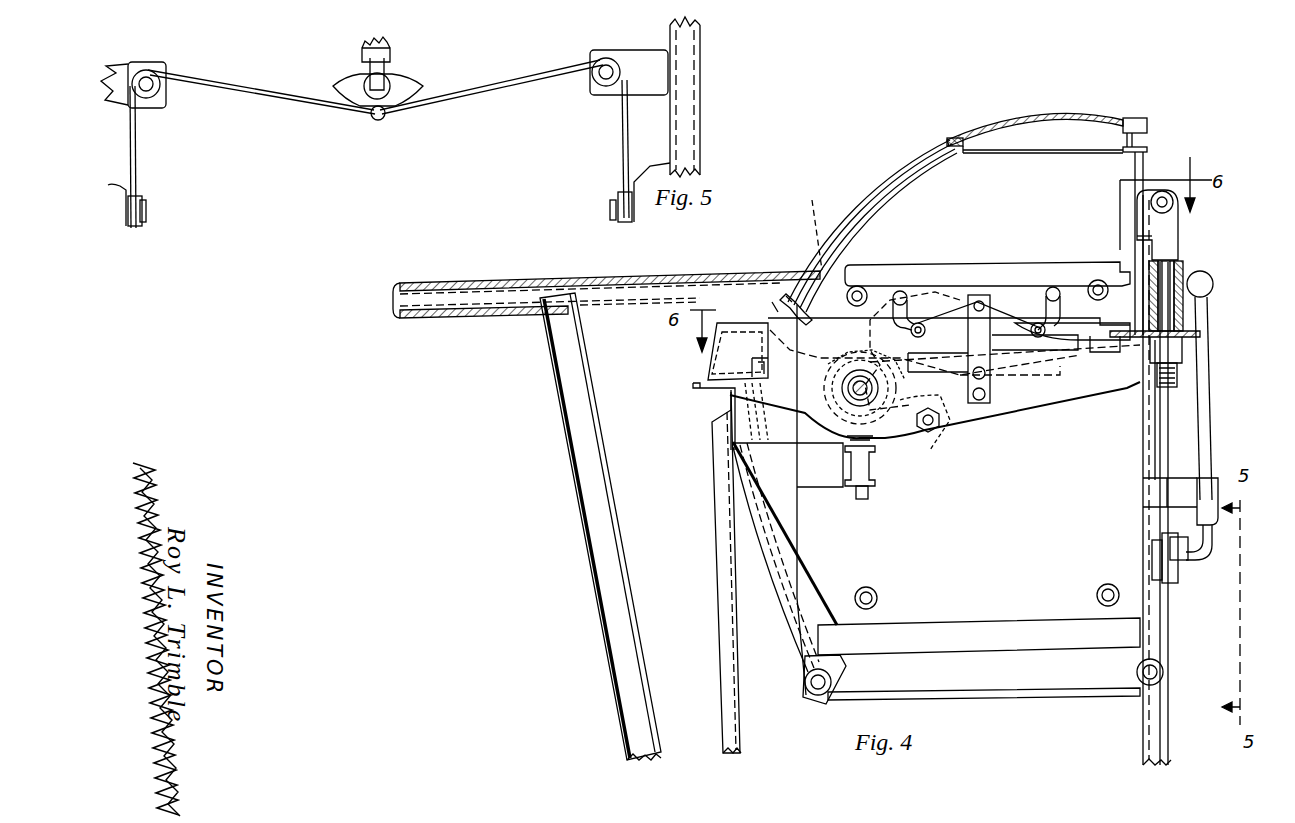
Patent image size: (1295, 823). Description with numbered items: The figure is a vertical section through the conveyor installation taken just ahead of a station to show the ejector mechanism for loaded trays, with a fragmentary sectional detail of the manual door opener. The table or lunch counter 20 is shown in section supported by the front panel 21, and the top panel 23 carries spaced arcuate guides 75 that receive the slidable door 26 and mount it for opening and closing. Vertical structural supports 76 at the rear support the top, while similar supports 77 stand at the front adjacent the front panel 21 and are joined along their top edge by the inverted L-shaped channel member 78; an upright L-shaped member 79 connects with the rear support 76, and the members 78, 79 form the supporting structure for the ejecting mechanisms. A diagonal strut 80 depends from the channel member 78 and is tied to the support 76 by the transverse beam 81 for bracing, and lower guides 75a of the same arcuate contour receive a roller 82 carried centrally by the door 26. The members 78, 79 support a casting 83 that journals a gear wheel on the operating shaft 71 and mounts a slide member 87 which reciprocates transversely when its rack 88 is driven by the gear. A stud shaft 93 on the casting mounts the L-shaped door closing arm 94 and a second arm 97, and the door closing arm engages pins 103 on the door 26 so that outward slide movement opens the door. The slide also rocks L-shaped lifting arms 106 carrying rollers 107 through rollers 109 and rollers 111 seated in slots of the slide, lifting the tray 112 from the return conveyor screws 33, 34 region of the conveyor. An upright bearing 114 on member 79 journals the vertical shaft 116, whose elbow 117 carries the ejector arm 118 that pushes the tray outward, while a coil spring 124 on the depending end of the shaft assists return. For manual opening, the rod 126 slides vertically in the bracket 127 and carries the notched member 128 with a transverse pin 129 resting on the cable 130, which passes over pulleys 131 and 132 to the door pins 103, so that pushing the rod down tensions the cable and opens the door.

In FIG. 4, the table or lunch counter 20 is at (505, 283).
In FIG. 4, the front panel 21 is at (575, 545).
In FIG. 4, the top panel 23 is at (1045, 116).
In FIG. 4, the slidable door 26 is at (856, 212).
In FIG. 4, the return conveyor screw 33 is at (1110, 584).
In FIG. 4, the return conveyor screw 34 is at (878, 600).
In FIG. 4, the operating shaft 71 is at (852, 395).
In FIG. 4, the arcuate guides 75 is at (907, 162).
In FIG. 4, the lower guides 75a is at (776, 561).
In FIG. 5, the structural support 76 is at (684, 78).
In FIG. 4, the structural support 76 is at (1152, 726).
In FIG. 4, the structural support 77 is at (728, 592).
In FIG. 4, the inverted L-shaped channel member 78 is at (712, 392).
In FIG. 4, the upright L-shaped member 79 is at (1112, 292).
In FIG. 4, the diagonal strut 80 is at (822, 612).
In FIG. 4, the transverse beam 81 is at (1004, 622).
In FIG. 4, the roller 82 is at (708, 370).
In FIG. 4, the casting 83 is at (1042, 396).
In FIG. 4, the slide member 87 is at (1095, 342).
In FIG. 4, the rack 88 is at (810, 435).
In FIG. 4, the stud shaft 93 is at (934, 445).
In FIG. 4, the door closing arm 94 is at (906, 452).
In FIG. 4, the second arm 97 is at (980, 440).
In FIG. 4, the pins 103 is at (792, 300).
In FIG. 4, the lifting arms 106 is at (940, 300).
In FIG. 4, the rollers 107 is at (1048, 296).
In FIG. 4, the rollers 109 is at (912, 300).
In FIG. 4, the rollers 111 is at (1078, 335).
In FIG. 4, the tray 112 is at (1000, 272).
In FIG. 4, the upright bearing 114 is at (1186, 312).
In FIG. 4, the vertical shaft 116 is at (1168, 282).
In FIG. 4, the elbow 117 is at (1166, 206).
In FIG. 4, the ejector arm 118 is at (1138, 235).
In FIG. 4, the coil spring 124 is at (1182, 372).
In FIG. 4, the rod 126 is at (1206, 416).
In FIG. 4, the bracket 127 is at (1206, 482).
In FIG. 5, the notched member 128 is at (402, 84).
In FIG. 4, the notched member 128 is at (1170, 568).
In FIG. 5, the transverse pin 129 is at (366, 120).
In FIG. 5, the cable 130 is at (238, 86).
In FIG. 5, the pulley 131 is at (152, 112).
In FIG. 5, the pulley 132 is at (138, 200).
In FIG. 4, the pulley 132 is at (838, 682).